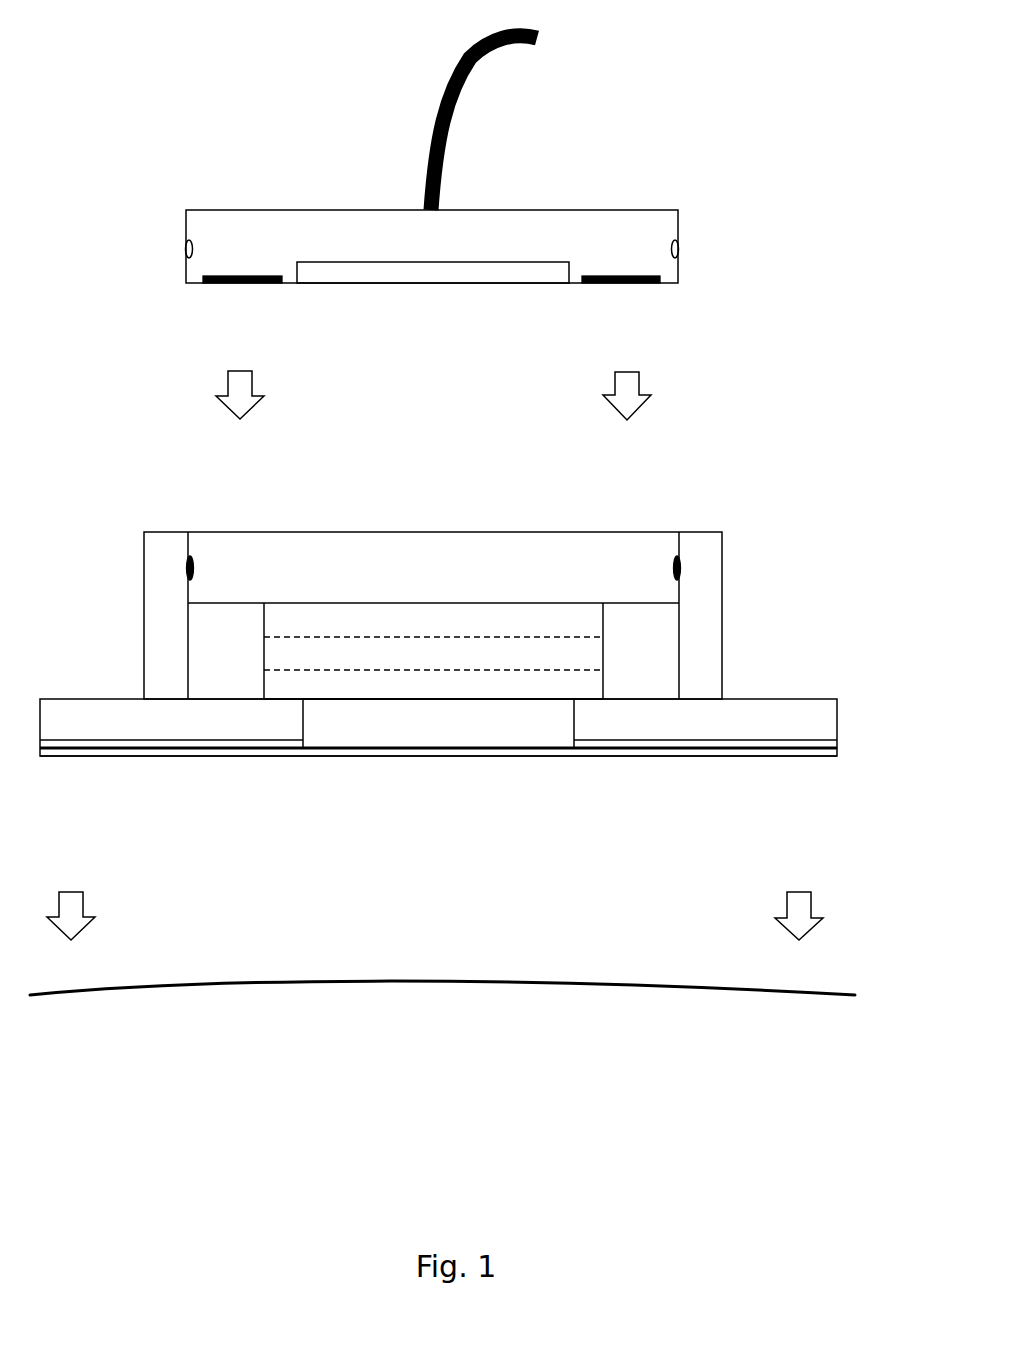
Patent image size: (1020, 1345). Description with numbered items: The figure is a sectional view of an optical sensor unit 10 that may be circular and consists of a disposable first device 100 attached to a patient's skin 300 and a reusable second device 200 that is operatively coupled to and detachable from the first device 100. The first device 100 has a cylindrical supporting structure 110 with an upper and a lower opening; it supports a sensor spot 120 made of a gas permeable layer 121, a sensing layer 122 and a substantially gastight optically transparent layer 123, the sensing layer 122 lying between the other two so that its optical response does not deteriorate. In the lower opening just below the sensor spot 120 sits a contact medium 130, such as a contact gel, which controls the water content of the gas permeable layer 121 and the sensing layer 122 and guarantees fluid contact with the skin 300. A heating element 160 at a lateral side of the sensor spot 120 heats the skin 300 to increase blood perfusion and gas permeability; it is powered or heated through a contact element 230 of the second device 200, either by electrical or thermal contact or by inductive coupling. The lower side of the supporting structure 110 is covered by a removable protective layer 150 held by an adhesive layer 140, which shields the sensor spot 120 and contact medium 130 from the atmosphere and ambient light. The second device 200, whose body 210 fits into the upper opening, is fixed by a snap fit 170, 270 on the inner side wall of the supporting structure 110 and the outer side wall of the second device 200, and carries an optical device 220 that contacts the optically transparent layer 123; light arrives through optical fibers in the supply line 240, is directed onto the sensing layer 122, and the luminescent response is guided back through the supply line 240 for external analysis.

The optical sensor unit 10 is at (92, 22).
The first device 100 is at (438, 646).
The supporting structure 110 is at (696, 538).
The sensor spot 120 is at (433, 756).
The gas permeable layer 121 is at (358, 690).
The sensing layer 122 is at (406, 655).
The optically transparent layer 123 is at (466, 625).
The contact medium 130 is at (558, 733).
The adhesive layer 140 is at (63, 743).
The removable protective layer 150 is at (140, 755).
The heating element 160 is at (210, 645).
The snap fit 170 is at (681, 565).
The second device 200 is at (451, 209).
The cap body 210 is at (573, 210).
The optical device 220 is at (395, 273).
The contact element 230 is at (203, 283).
The supply line 240 is at (452, 78).
The snap fit 270 is at (679, 248).
The skin 300 is at (132, 988).